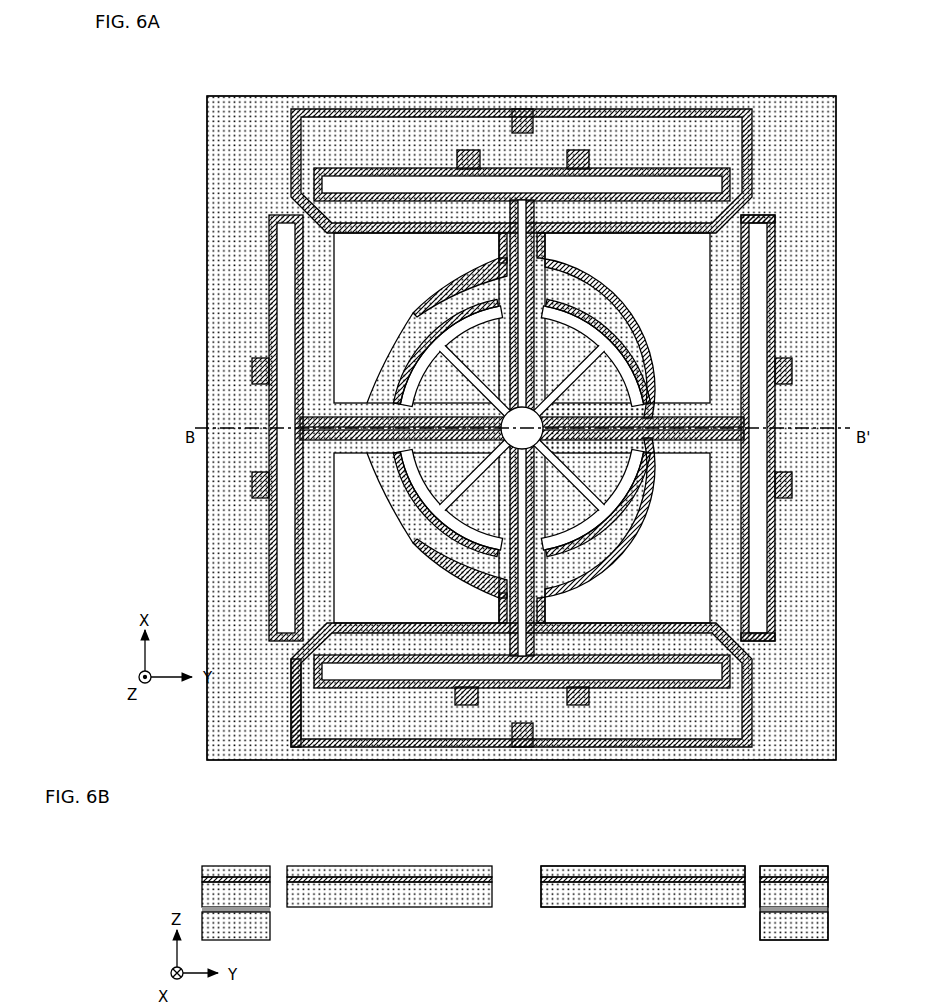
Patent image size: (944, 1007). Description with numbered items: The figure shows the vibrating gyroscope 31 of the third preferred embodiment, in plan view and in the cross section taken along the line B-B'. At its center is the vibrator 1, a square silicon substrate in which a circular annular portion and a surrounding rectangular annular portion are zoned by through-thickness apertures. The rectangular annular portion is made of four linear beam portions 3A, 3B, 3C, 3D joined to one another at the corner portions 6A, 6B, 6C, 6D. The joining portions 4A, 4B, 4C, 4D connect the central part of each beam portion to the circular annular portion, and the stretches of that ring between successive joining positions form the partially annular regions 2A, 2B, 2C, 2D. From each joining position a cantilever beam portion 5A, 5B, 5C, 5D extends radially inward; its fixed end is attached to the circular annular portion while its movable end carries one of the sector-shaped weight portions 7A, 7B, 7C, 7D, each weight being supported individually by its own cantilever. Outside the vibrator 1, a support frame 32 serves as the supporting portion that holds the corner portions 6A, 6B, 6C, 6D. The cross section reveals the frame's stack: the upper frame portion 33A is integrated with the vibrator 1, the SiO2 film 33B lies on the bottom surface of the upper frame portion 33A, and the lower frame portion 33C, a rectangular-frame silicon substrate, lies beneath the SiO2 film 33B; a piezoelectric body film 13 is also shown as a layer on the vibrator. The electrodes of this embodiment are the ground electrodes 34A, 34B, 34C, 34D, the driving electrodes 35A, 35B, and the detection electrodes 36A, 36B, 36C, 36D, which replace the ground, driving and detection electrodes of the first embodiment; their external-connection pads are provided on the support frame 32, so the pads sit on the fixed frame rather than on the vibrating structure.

In FIG. 6A, the vibrator 1 is at (764, 318).
In FIG. 6B, the vibrator 1 is at (588, 860).
In FIG. 6A, the piezoelectric body film 13 is at (800, 578).
In FIG. 6B, the piezoelectric body film 13 is at (812, 870).
In FIG. 6A, the vibrating gyroscope 31 is at (803, 80).
In FIG. 6B, the vibrating gyroscope 31 is at (693, 850).
In FIG. 6A, the support frame 32 is at (790, 745).
In FIG. 6B, the support frame 32 is at (823, 856).
In FIG. 6A, the partially annular region 2A is at (638, 337).
In FIG. 6A, the partially annular region 2B is at (636, 522).
In FIG. 6A, the partially annular region 2C is at (402, 520).
In FIG. 6A, the partially annular region 2D is at (399, 282).
In FIG. 6A, the beam portion 3A is at (675, 210).
In FIG. 6A, the beam portion 3B is at (760, 285).
In FIG. 6A, the beam portion 3C is at (497, 648).
In FIG. 6A, the beam portion 3D is at (300, 455).
In FIG. 6A, the joining portion 4A is at (548, 250).
In FIG. 6A, the joining portion 4B is at (690, 462).
In FIG. 6A, the joining portion 4C is at (500, 605).
In FIG. 6A, the joining portion 4D is at (353, 403).
In FIG. 6A, the cantilever beam portion 5A is at (577, 290).
In FIG. 6A, the cantilever beam portion 5B is at (640, 508).
In FIG. 6A, the cantilever beam portion 5C is at (465, 545).
In FIG. 6A, the cantilever beam portion 5D is at (398, 400).
In FIG. 6A, the corner portion 6A is at (742, 215).
In FIG. 6A, the corner portion 6B is at (745, 640).
In FIG. 6A, the corner portion 6C is at (300, 650).
In FIG. 6A, the corner portion 6D is at (300, 213).
In FIG. 6A, the weight portion 7A is at (620, 300).
In FIG. 6A, the weight portion 7B is at (612, 525).
In FIG. 6A, the weight portion 7C is at (430, 535).
In FIG. 6A, the weight portion 7D is at (430, 385).
In FIG. 6A, the ground electrode 34A is at (468, 150).
In FIG. 6A, the ground electrode 34B is at (792, 372).
In FIG. 6A, the ground electrode 34C is at (578, 705).
In FIG. 6A, the ground electrode 34D is at (258, 490).
In FIG. 6A, the driving electrode 35A is at (522, 109).
In FIG. 6A, the driving electrode 35B is at (530, 745).
In FIG. 6A, the detection electrode 36A is at (580, 150).
In FIG. 6A, the detection electrode 36B is at (792, 485).
In FIG. 6A, the detection electrode 36C is at (457, 707).
In FIG. 6A, the detection electrode 36D is at (258, 360).
In FIG. 6B, the upper frame portion 33A is at (812, 898).
In FIG. 6B, the SiO2 film 33B is at (760, 908).
In FIG. 6B, the lower frame portion 33C is at (788, 933).